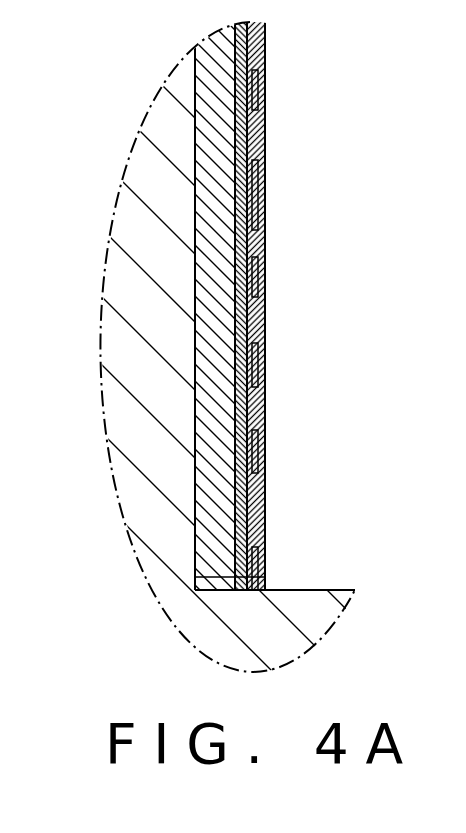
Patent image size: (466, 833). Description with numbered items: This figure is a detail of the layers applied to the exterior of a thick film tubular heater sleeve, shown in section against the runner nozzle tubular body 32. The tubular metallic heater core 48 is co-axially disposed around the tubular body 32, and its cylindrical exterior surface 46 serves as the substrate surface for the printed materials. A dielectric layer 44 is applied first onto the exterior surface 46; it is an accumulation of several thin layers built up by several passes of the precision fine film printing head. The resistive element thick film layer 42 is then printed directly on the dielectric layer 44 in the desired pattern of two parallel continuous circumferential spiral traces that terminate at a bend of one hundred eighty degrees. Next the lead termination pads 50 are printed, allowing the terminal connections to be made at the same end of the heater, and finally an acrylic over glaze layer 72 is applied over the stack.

The tubular body 32 is at (155, 378).
The tubular metallic heater core 48 is at (217, 122).
The dielectric layer 44 is at (265, 217).
The resistive element layer 42 is at (262, 448).
The acrylic over glaze layer 72 is at (262, 397).
The power terminal pads 50 is at (262, 513).
The exterior surface 46 is at (195, 577).